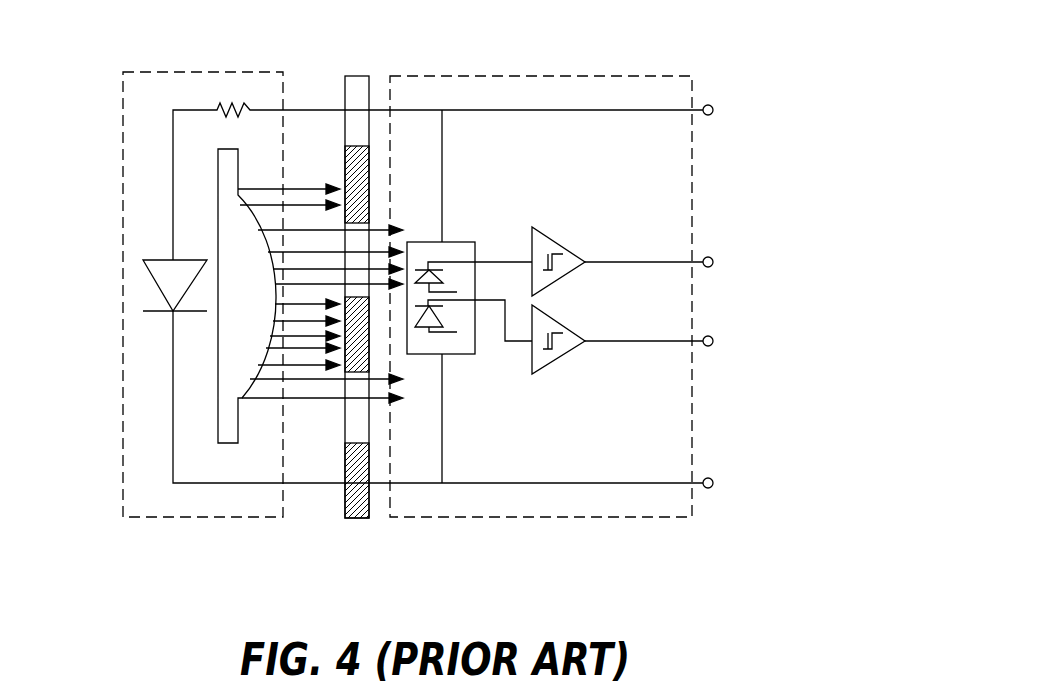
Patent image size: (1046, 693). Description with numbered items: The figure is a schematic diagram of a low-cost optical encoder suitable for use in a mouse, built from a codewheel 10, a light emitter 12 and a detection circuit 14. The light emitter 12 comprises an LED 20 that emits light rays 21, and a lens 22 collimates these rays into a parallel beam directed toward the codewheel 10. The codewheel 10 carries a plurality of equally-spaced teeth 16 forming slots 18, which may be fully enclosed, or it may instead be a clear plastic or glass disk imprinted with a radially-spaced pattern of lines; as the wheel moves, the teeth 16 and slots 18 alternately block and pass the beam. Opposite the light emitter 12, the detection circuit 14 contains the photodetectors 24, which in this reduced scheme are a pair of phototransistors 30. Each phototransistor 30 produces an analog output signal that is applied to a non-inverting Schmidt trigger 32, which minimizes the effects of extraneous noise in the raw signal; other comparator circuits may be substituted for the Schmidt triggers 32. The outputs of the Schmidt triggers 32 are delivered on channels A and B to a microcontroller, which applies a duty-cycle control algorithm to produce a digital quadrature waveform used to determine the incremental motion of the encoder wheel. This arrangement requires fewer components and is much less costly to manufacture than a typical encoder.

The codewheel 10 is at (359, 524).
The light emitter 12 is at (128, 518).
The detection circuit 14 is at (608, 518).
The teeth 16 is at (345, 497).
The slots 18 is at (355, 240).
The LED 20 is at (158, 285).
The light rays 21 is at (333, 398).
The lens 22 is at (218, 343).
The photodetectors 24 is at (459, 374).
The phototransistors 30 is at (445, 270).
The Schmidt trigger 32 is at (553, 241).